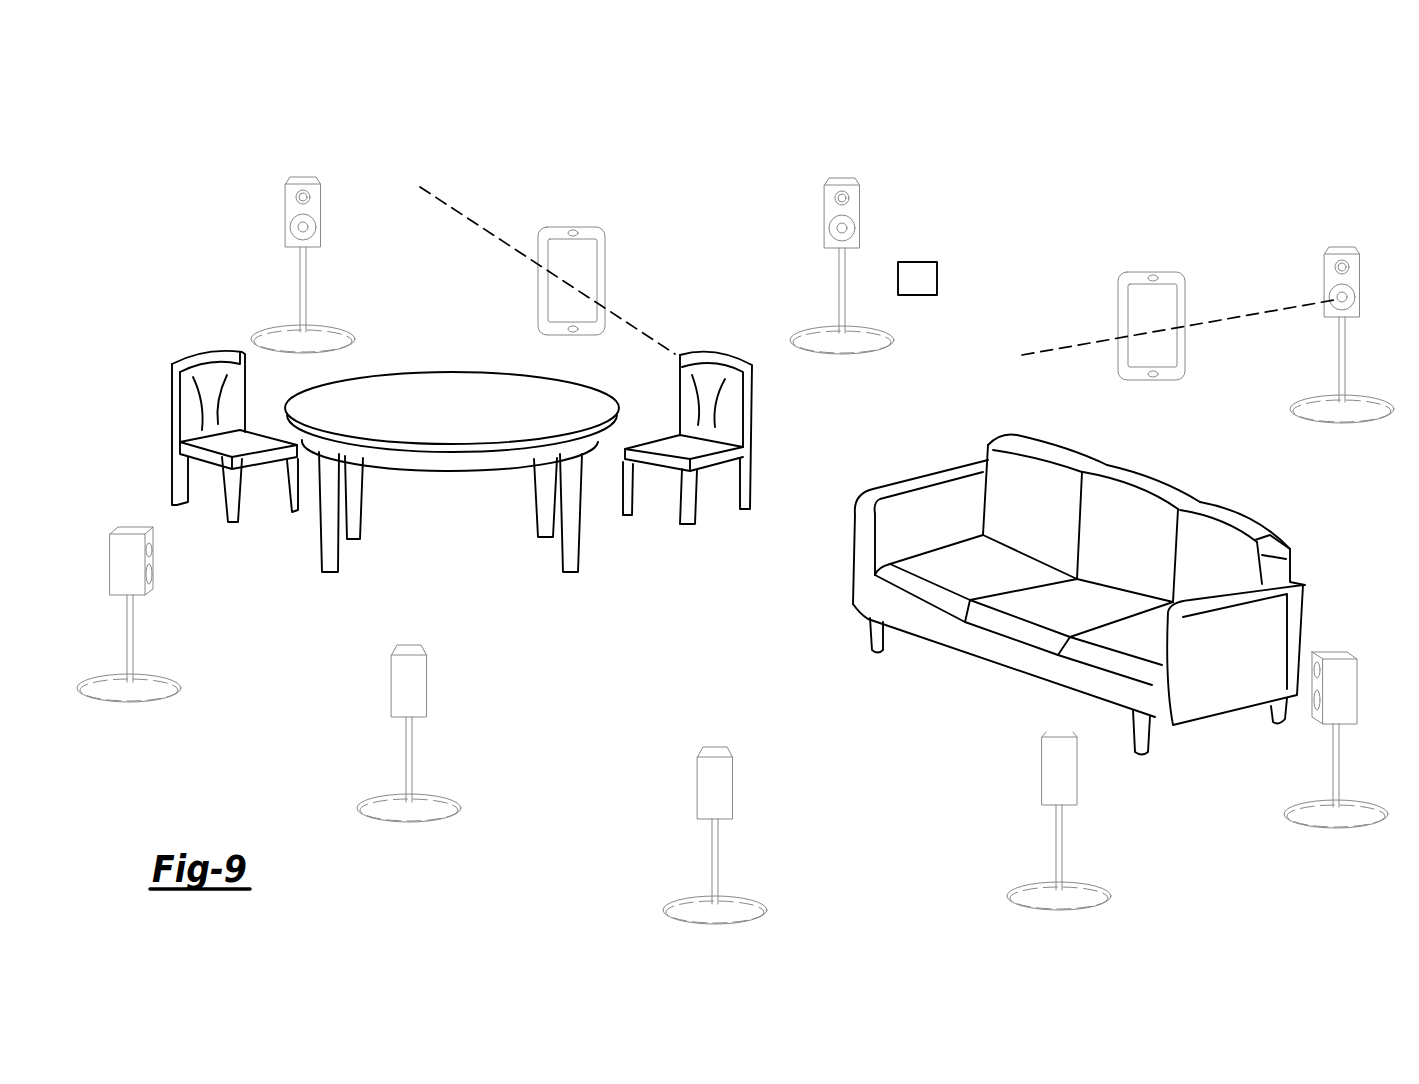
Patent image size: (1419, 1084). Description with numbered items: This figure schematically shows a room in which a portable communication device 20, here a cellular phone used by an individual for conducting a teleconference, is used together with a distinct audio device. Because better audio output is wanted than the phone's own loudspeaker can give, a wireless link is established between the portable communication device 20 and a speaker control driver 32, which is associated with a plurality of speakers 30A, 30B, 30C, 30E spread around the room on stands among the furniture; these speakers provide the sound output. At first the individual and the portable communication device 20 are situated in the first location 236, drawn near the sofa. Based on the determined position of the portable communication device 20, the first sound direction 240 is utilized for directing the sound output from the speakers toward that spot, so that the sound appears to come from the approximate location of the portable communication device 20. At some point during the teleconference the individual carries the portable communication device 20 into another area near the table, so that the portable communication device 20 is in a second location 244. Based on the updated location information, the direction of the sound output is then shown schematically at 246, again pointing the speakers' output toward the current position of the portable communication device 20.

The portable communication device 20 is at (605, 270).
The speaker 30A is at (1344, 245).
The speaker 30B is at (825, 212).
The speaker 30C is at (285, 212).
The speaker 30E is at (1357, 672).
The speaker control driver 32 is at (928, 289).
The first location 236 is at (1153, 392).
The first sound direction 240 is at (1260, 312).
The second location 244 is at (570, 214).
The direction of the sound output 246 is at (644, 329).